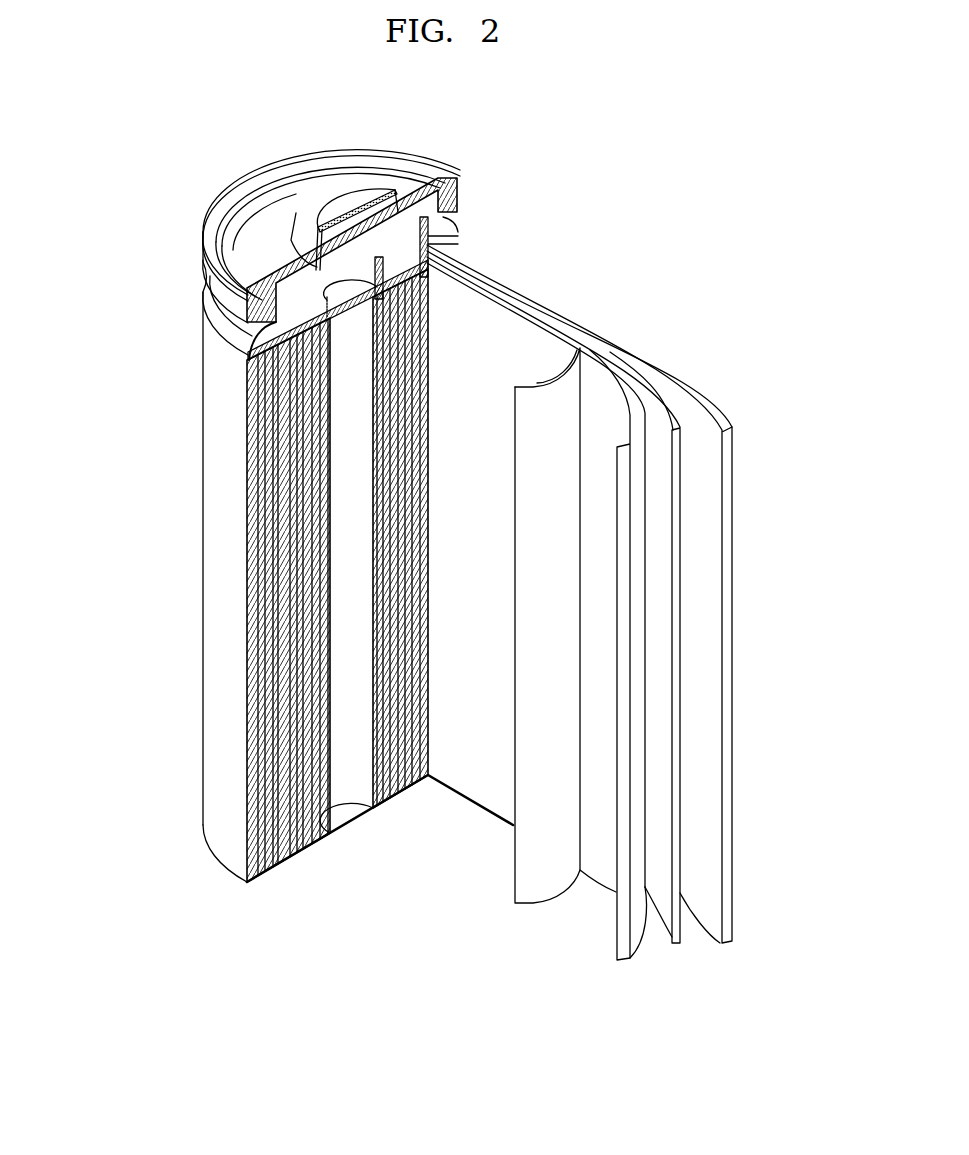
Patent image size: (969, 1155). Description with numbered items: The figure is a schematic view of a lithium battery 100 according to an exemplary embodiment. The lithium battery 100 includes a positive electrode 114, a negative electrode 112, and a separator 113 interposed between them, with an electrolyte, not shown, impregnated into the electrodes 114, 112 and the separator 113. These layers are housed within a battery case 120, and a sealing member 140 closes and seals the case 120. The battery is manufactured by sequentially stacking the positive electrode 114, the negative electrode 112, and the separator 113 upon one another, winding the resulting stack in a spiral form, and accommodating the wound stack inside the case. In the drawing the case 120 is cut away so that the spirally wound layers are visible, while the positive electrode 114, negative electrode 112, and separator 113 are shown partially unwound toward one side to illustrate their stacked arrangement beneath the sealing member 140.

The lithium battery 100 is at (606, 197).
The battery case 120 is at (210, 570).
The sealing member 140 is at (326, 195).
The separator 113 is at (537, 320).
The positive electrode 114 is at (605, 362).
The negative electrode 112 is at (728, 510).